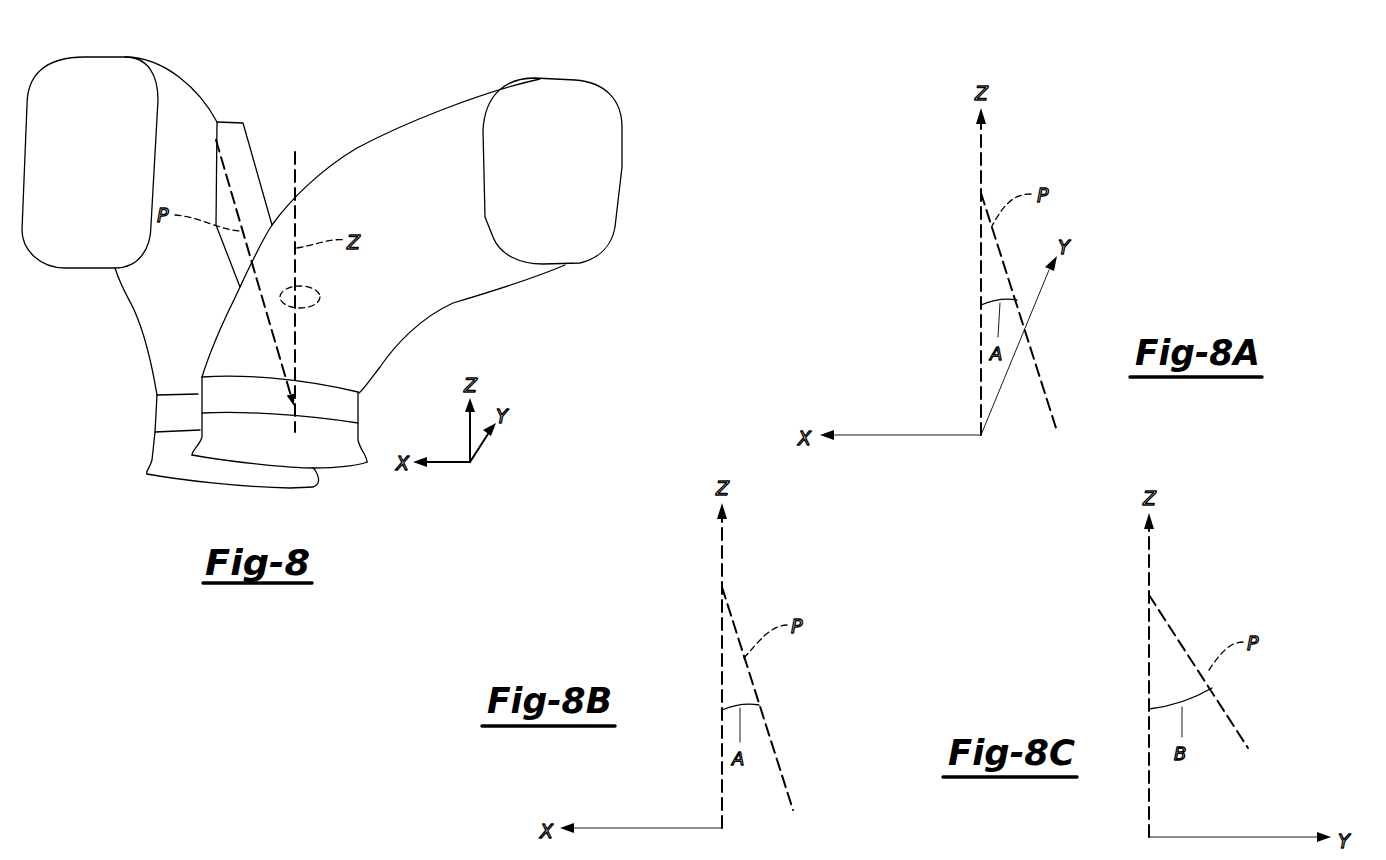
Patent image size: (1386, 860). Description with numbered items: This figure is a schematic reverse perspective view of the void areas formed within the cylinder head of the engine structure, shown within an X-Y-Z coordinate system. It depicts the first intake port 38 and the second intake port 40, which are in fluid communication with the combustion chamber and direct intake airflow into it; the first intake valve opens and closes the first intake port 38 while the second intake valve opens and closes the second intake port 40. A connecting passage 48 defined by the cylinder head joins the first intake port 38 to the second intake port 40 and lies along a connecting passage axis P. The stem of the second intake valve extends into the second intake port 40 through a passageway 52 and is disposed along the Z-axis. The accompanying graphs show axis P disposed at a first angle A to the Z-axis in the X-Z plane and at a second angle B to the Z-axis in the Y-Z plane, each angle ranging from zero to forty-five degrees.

The first intake port 38 is at (165, 93).
The second intake port 40 is at (373, 167).
The connecting passage 48 is at (245, 157).
The passageway 52 is at (322, 297).